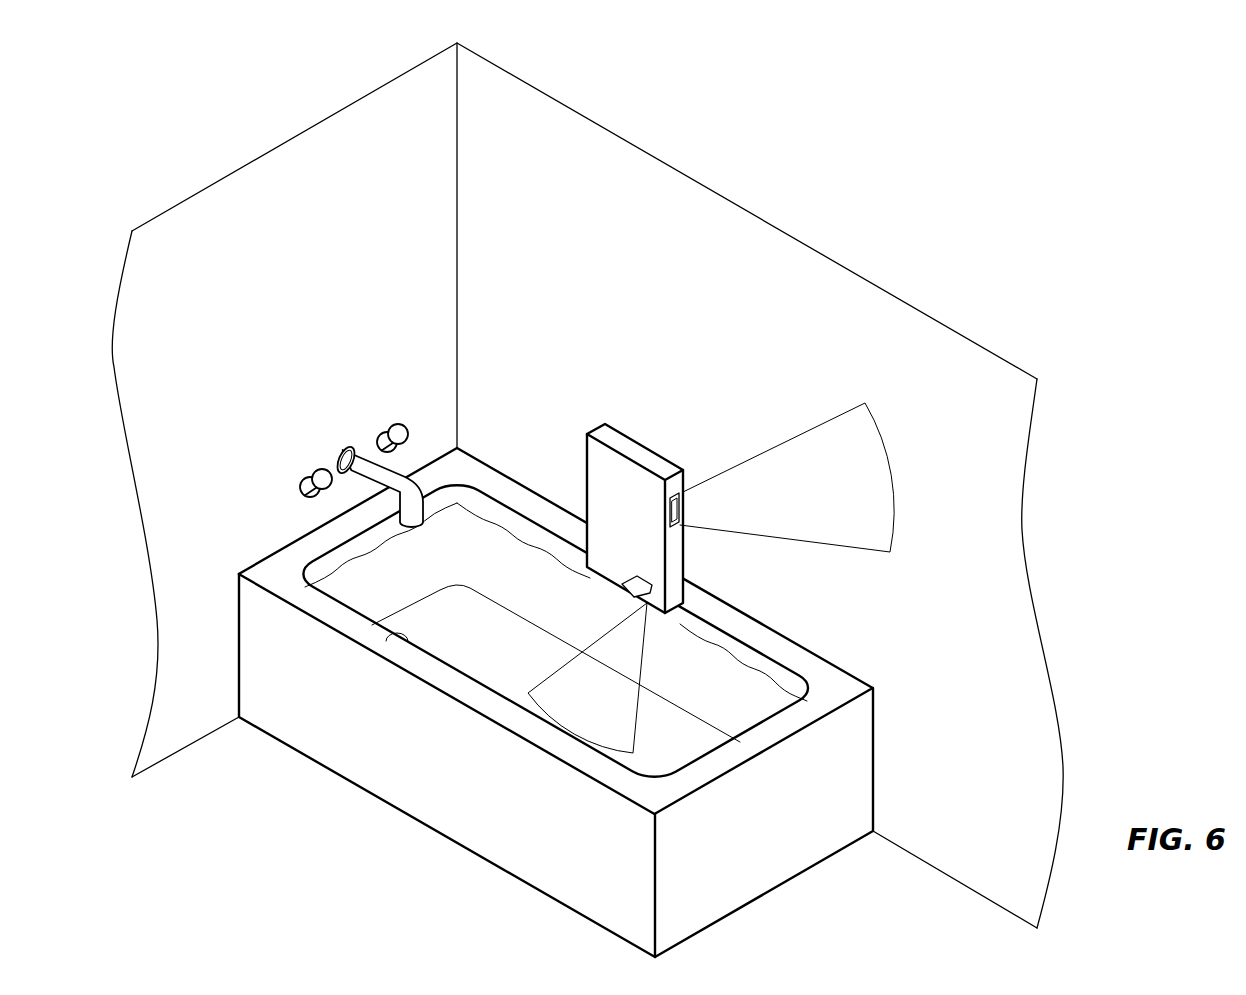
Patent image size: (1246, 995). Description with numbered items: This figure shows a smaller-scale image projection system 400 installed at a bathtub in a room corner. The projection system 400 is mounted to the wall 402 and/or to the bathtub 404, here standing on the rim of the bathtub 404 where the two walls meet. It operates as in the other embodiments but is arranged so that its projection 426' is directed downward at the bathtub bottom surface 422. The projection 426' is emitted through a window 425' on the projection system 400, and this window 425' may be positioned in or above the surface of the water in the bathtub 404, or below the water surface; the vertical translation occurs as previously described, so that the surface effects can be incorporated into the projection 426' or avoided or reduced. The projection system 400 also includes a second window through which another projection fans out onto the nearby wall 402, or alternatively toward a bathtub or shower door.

The projection system 400 is at (649, 444).
The wall 402 is at (542, 342).
The bathtub 404 is at (785, 837).
The bathtub bottom surface 422 is at (485, 643).
The window 425' is at (582, 521).
The projection 426' is at (587, 678).